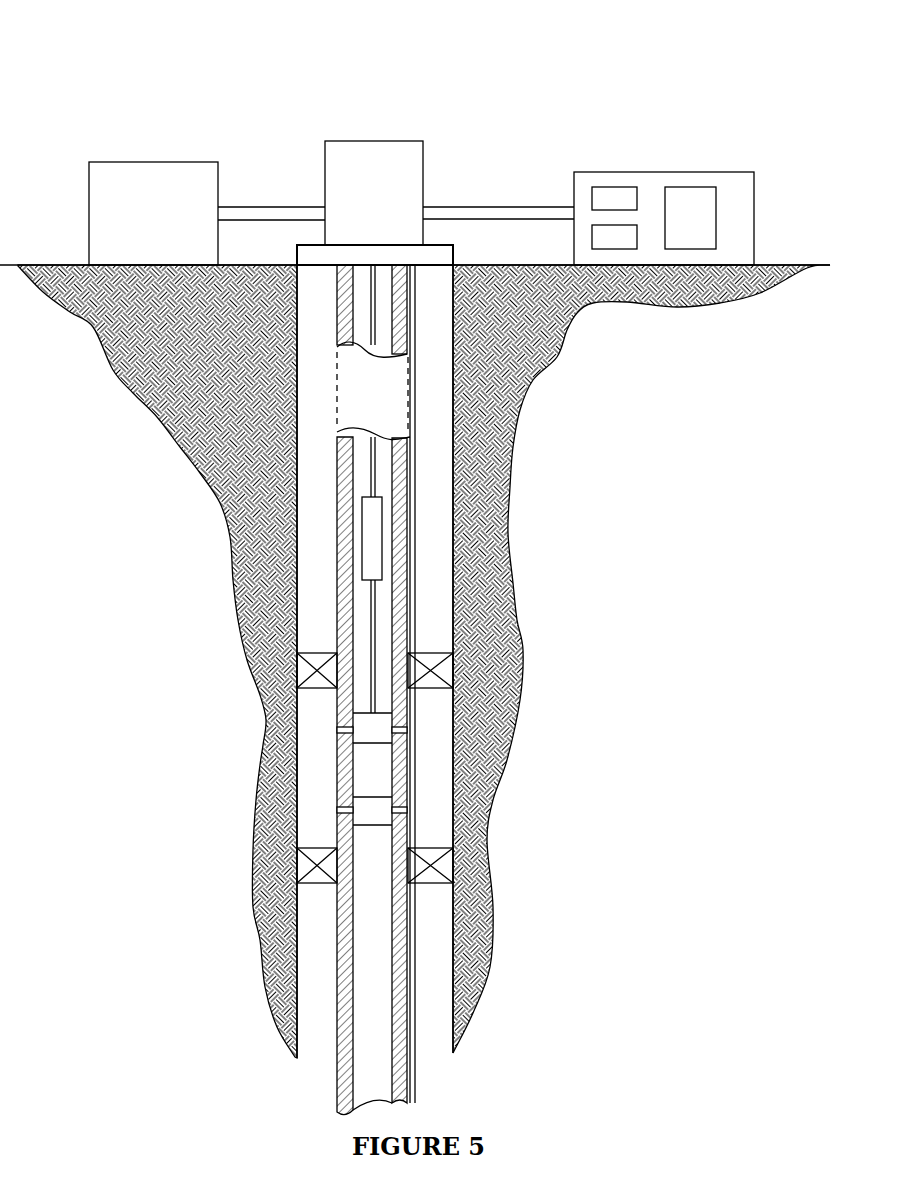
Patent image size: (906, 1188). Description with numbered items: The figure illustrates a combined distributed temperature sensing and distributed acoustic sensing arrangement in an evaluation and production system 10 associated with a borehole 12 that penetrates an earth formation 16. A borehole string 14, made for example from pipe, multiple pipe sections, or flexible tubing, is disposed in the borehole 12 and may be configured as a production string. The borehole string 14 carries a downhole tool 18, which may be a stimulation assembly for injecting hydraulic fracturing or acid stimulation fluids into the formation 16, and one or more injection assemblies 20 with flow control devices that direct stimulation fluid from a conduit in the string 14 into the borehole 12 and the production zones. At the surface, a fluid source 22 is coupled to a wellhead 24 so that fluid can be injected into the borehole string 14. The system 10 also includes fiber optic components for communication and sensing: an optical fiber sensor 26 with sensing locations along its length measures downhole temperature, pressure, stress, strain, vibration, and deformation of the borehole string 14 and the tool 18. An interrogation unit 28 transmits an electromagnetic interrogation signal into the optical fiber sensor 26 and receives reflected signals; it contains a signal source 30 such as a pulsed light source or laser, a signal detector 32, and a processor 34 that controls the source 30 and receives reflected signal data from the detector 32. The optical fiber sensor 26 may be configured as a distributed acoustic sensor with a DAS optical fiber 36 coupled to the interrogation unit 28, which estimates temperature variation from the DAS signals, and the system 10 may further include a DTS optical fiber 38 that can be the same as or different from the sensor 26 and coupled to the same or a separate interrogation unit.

The evaluation and production system 10 is at (82, 42).
The borehole 12 is at (437, 581).
The borehole string 14 is at (440, 514).
The earth formation 16 is at (205, 397).
The downhole tool 18 is at (313, 781).
The injection assembly 20 is at (363, 725).
The fluid source 22 is at (120, 172).
The wellhead 24 is at (373, 150).
The optical fiber sensor 26 is at (414, 312).
The interrogation unit 28 is at (698, 172).
The signal source 30 is at (608, 192).
The signal detector 32 is at (607, 235).
The processor 34 is at (703, 207).
The DAS optical fiber 36 is at (410, 333).
The DTS optical fiber 38 is at (412, 437).